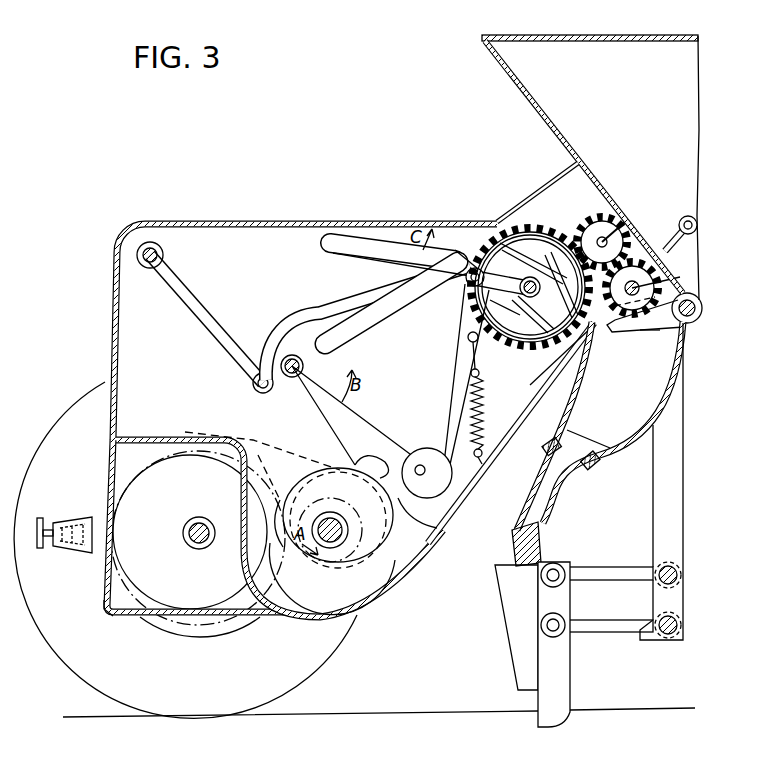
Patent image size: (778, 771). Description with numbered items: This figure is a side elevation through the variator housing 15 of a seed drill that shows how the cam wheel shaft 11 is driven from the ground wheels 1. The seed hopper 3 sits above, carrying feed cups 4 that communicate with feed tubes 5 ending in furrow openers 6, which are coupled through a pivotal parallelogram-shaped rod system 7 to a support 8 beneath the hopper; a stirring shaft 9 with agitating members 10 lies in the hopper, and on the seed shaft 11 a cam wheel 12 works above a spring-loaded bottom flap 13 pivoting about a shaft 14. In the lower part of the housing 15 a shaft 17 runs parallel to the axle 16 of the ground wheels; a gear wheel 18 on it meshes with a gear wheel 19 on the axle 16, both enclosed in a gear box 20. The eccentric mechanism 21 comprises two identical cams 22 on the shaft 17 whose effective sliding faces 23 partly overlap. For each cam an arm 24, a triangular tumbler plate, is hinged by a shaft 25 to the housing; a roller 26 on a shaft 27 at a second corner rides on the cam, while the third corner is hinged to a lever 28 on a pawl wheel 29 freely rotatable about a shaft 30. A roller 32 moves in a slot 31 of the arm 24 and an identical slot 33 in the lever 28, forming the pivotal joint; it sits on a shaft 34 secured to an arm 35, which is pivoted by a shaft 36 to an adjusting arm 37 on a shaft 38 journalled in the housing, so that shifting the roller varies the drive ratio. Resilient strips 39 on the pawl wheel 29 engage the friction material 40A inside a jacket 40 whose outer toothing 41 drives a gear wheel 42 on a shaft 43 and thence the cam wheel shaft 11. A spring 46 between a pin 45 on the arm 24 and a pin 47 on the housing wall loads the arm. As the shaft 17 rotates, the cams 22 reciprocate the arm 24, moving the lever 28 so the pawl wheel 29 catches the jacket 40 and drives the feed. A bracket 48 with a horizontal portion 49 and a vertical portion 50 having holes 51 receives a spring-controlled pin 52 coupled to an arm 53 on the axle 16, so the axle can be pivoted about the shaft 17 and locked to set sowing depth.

The ground wheels 1 is at (285, 690).
The seed hopper 3 is at (524, 70).
The feed cups 4 is at (570, 403).
The feed tubes 5 is at (546, 523).
The furrow openers 6 is at (500, 638).
The pivotal parallelogram-shaped rod system 7 is at (603, 620).
The support 8 is at (653, 492).
The stirring shaft 9 is at (676, 248).
The agitating members 10 is at (686, 223).
The seed shaft 11 is at (680, 277).
The cam wheel 12 is at (640, 333).
The spring-loaded bottom flap 13 is at (656, 333).
The shaft 14 is at (688, 324).
The housing 15 is at (238, 221).
The axle 16 is at (196, 549).
The shaft 17 is at (339, 530).
The gear wheel 18 is at (305, 490).
The gear wheel 19 is at (270, 488).
The gear box 20 is at (201, 637).
The eccentric mechanism 21 is at (322, 618).
The cams 22 is at (282, 521).
The effective sliding faces 23 is at (375, 458).
The arm 24 is at (330, 419).
The shaft 25 is at (290, 379).
The roller 26 is at (431, 543).
The shaft 27 is at (427, 457).
The lever 28 is at (340, 233).
The pawl wheel 29 is at (521, 240).
The shaft 30 is at (489, 300).
The slot 31 is at (396, 320).
The roller 32 is at (473, 286).
The slot 33 is at (333, 253).
The shaft 34 is at (480, 250).
The arm 35 is at (324, 300).
The shaft 36 is at (253, 386).
The adjusting arm 37 is at (211, 340).
The shaft 38 is at (165, 258).
The resilient strips 39 is at (576, 240).
The jacket 40 is at (543, 245).
The friction material 40A is at (606, 326).
The toothing 41 is at (526, 200).
The gear wheel 42 is at (613, 215).
The shaft 43 is at (627, 220).
The pin 45 is at (468, 338).
The spring 46 is at (484, 410).
The pin 47 is at (479, 470).
The bracket 48 is at (122, 618).
The horizontal portion 49 is at (241, 626).
The vertical portion 50 is at (112, 452).
The holes 51 is at (100, 604).
The spring-controlled pin 52 is at (40, 549).
The arm 53 is at (73, 516).